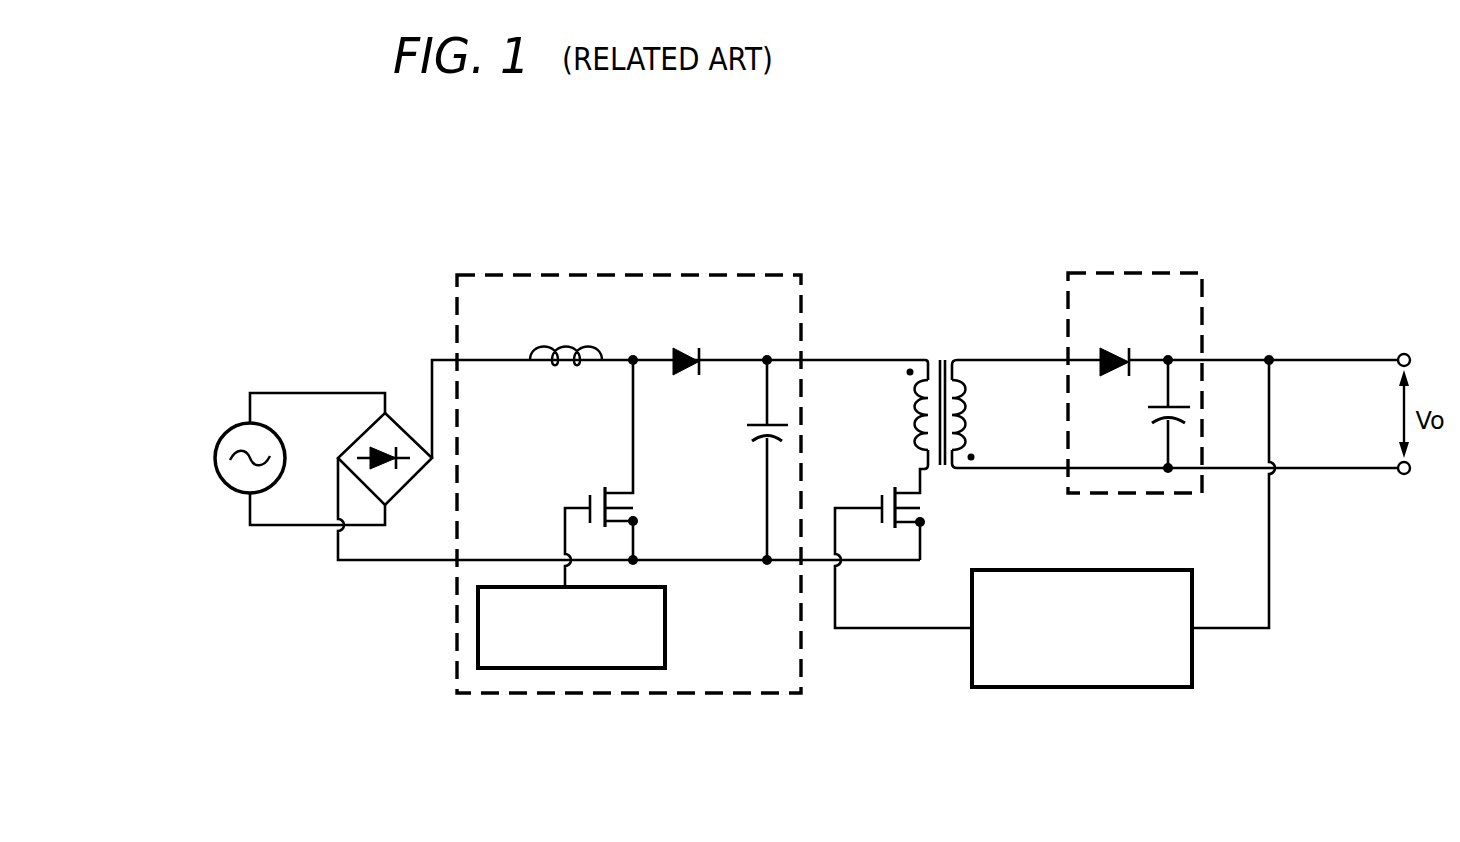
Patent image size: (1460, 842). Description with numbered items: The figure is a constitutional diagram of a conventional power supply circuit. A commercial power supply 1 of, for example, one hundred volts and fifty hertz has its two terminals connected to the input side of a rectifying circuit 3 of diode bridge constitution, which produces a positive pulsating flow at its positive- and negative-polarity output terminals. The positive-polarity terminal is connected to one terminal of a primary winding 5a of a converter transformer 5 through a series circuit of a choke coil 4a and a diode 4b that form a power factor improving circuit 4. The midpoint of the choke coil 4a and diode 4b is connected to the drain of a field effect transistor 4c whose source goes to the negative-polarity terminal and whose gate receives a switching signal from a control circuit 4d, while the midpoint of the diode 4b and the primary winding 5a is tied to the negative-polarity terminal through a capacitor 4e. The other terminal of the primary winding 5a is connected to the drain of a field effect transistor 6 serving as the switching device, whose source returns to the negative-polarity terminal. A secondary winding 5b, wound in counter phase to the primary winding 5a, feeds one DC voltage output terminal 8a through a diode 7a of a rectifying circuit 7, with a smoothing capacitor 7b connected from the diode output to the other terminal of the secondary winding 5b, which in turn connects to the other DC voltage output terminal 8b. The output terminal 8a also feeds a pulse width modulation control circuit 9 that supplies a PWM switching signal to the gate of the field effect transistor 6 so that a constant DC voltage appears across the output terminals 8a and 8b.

The commercial power supply 1 is at (215, 458).
The rectifying circuit 3 is at (413, 450).
The power factor improving circuit 4 is at (622, 275).
The choke coil 4a is at (566, 342).
The diode 4b is at (690, 345).
The field effect transistor 4c is at (646, 508).
The control circuit 4d is at (665, 627).
The capacitor 4e is at (748, 431).
The converter transformer 5 is at (962, 329).
The primary winding 5a is at (916, 413).
The secondary winding 5b is at (970, 415).
The field effect transistor 6 is at (935, 508).
The rectifying circuit 7 is at (1137, 273).
The diode 7a is at (1120, 348).
The smoothing capacitor 7b is at (1150, 412).
The DC voltage output terminal 8a is at (1404, 353).
The DC voltage output terminal 8b is at (1404, 476).
The pulse width modulation control circuit 9 is at (1180, 570).